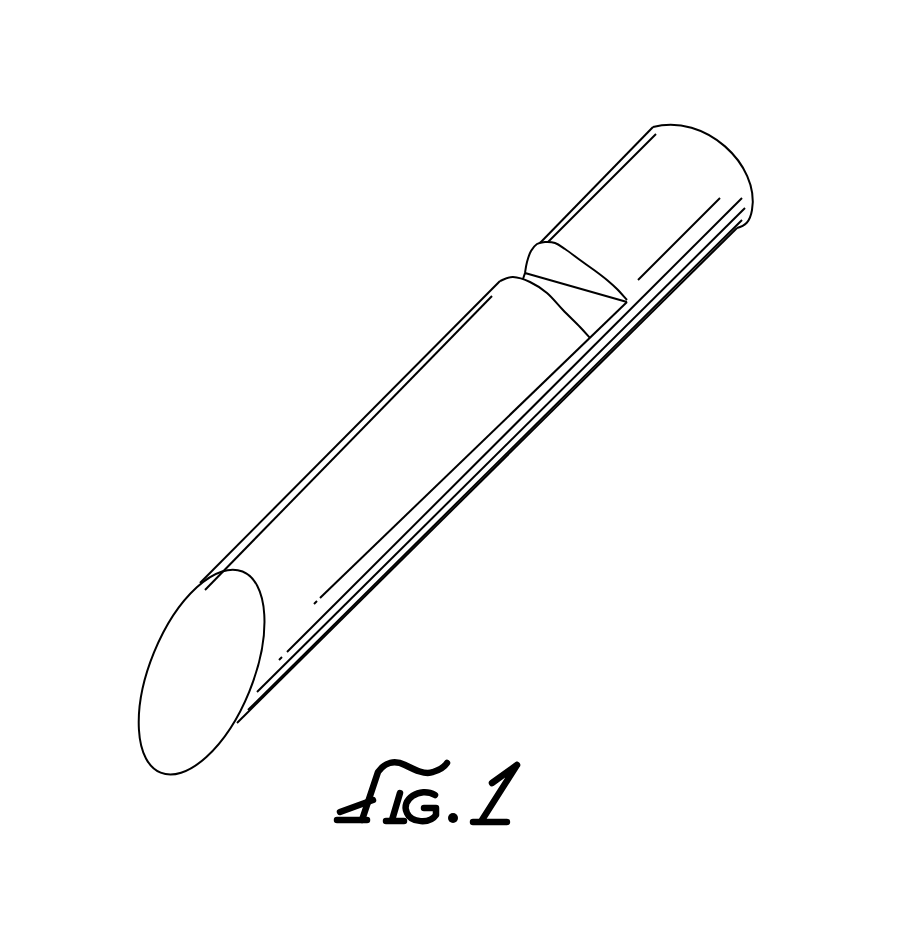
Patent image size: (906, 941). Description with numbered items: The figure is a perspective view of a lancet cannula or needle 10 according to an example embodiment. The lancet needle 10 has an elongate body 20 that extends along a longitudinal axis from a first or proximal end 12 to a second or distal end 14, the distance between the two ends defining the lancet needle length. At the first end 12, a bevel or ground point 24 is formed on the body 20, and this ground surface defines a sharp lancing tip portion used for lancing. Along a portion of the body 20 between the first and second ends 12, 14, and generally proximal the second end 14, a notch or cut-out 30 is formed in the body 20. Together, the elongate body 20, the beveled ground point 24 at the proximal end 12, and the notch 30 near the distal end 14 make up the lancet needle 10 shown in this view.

The lancet needle 10 is at (410, 455).
The first or proximal end 12 is at (158, 714).
The second or distal end 14 is at (755, 127).
The elongate body 20 is at (455, 425).
The bevel or ground point 24 is at (163, 785).
The notch or cut-out 30 is at (515, 258).